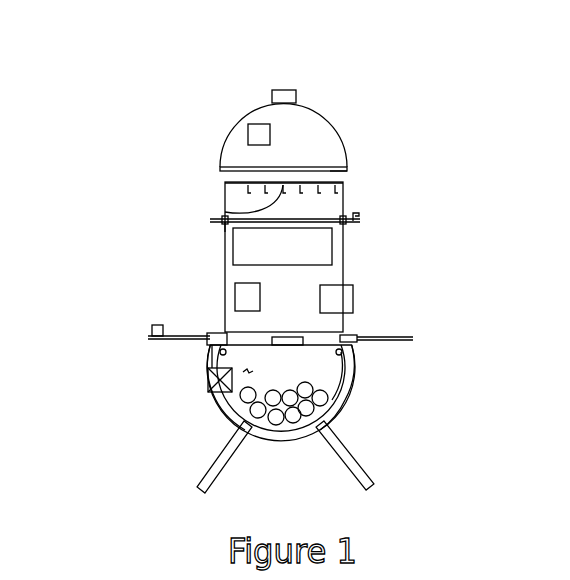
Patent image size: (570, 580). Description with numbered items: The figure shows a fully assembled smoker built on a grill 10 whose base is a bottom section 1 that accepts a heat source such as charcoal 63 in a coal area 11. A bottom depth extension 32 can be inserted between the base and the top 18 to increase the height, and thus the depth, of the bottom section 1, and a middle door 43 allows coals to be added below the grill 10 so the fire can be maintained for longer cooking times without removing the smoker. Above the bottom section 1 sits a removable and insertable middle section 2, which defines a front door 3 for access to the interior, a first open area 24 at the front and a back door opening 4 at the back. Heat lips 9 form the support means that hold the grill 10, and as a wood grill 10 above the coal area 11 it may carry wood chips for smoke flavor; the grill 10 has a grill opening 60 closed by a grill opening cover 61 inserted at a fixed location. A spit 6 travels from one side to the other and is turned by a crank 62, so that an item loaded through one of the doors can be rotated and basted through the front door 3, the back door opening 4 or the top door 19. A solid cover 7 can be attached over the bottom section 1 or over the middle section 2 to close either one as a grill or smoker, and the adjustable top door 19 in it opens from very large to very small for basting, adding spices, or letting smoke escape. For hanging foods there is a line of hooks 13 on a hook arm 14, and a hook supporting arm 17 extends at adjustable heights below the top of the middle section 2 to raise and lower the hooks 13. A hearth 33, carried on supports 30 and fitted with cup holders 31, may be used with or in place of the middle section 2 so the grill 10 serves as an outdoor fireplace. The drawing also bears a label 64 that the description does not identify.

The bottom section 1 is at (340, 414).
The middle section 2 is at (343, 240).
The front door 3 is at (278, 238).
The back door opening 4 is at (235, 291).
The spit 6 is at (302, 217).
The solid cover 7 is at (332, 130).
The heat lips 9 is at (210, 352).
The grill 10 is at (352, 347).
The coal area 11 is at (352, 392).
The hooks 13 is at (222, 220).
The hook arm 14 is at (225, 170).
The hook supporting arm 17 is at (225, 196).
The top 18 is at (340, 168).
The top door 19 is at (250, 134).
The first open area 24 is at (222, 408).
The supports 30 is at (353, 334).
The cup holders 31 is at (150, 333).
The bottom depth extension 32 is at (347, 368).
The hearth 33 is at (355, 338).
The middle door 43 is at (225, 392).
The grill opening 60 is at (348, 362).
The grill opening cover 61 is at (297, 332).
The crank 62 is at (360, 220).
The charcoal 63 is at (290, 420).
The side wall 64 is at (223, 226).